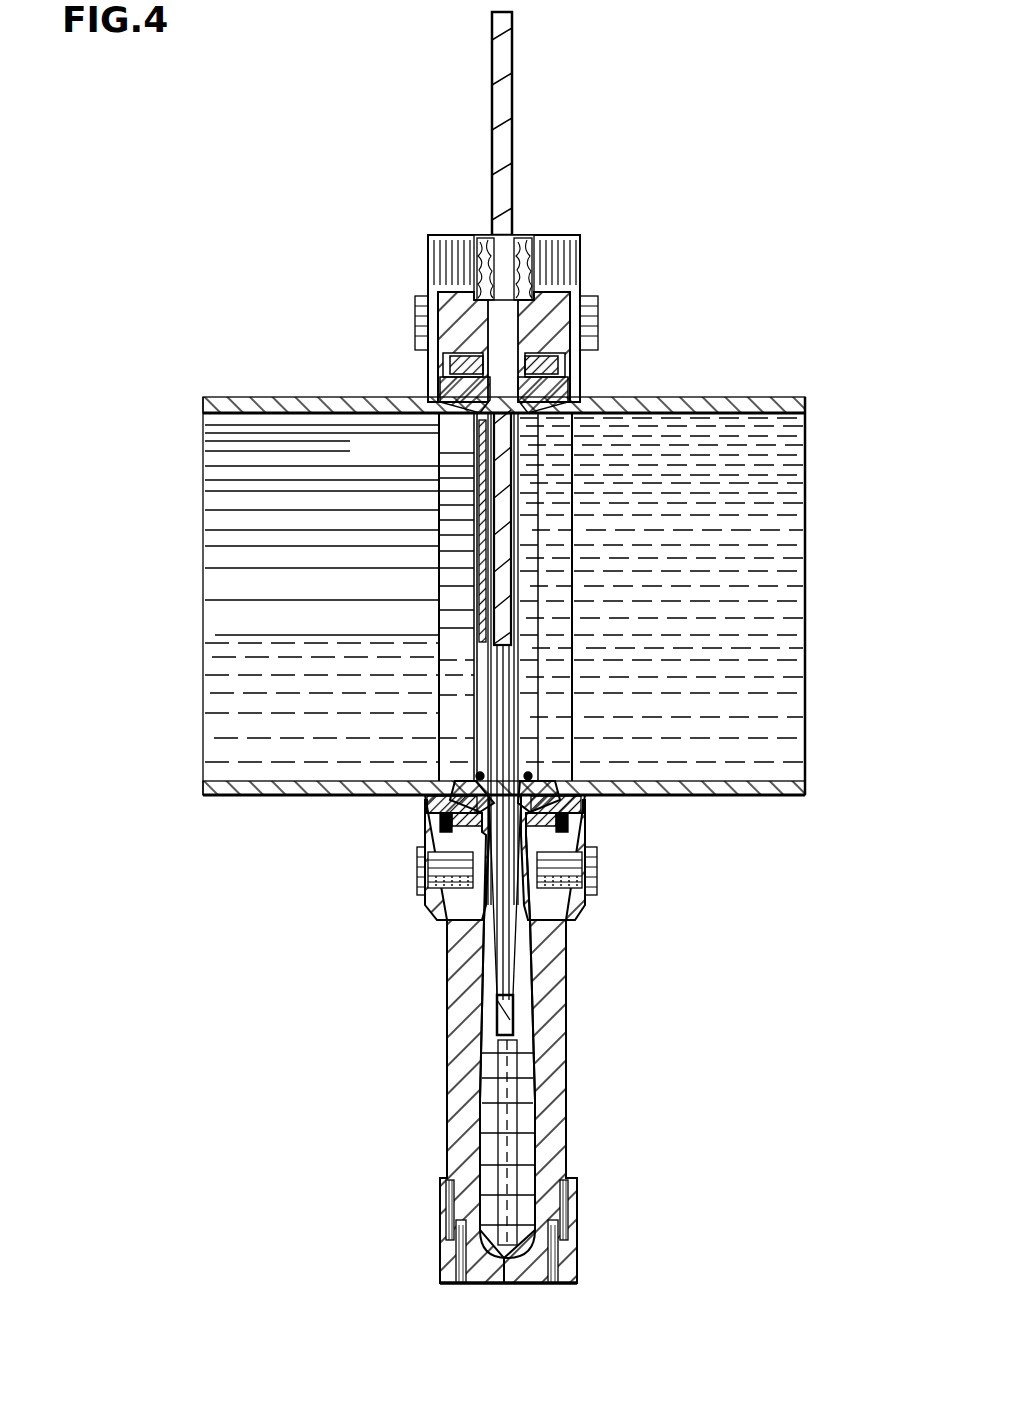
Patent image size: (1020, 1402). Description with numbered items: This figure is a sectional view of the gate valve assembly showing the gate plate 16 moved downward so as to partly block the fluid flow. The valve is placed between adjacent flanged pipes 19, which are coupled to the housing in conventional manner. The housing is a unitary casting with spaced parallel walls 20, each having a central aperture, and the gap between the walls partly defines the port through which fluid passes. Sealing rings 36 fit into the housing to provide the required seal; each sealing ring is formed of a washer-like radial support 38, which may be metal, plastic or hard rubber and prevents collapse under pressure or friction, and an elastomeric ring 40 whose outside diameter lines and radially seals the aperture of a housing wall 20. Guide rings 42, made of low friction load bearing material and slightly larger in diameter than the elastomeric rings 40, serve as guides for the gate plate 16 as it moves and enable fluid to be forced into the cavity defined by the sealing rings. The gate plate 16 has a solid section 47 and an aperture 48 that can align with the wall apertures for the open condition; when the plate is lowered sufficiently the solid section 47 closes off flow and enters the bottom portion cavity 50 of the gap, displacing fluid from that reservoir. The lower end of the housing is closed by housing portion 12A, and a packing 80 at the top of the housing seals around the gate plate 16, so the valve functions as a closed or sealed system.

The housing portion 12A is at (526, 1285).
The gate plate 16 is at (516, 580).
The flanged pipes 19 is at (298, 396).
The walls 20 is at (447, 966).
The sealing rings 36 is at (456, 415).
The radial support 38 is at (470, 806).
The elastomeric ring 40 is at (474, 786).
The guide ring 42 is at (470, 830).
The solid section 47 is at (512, 166).
The aperture 48 is at (499, 677).
The bottom portion cavity 50 is at (520, 1076).
The packing 80 is at (484, 237).